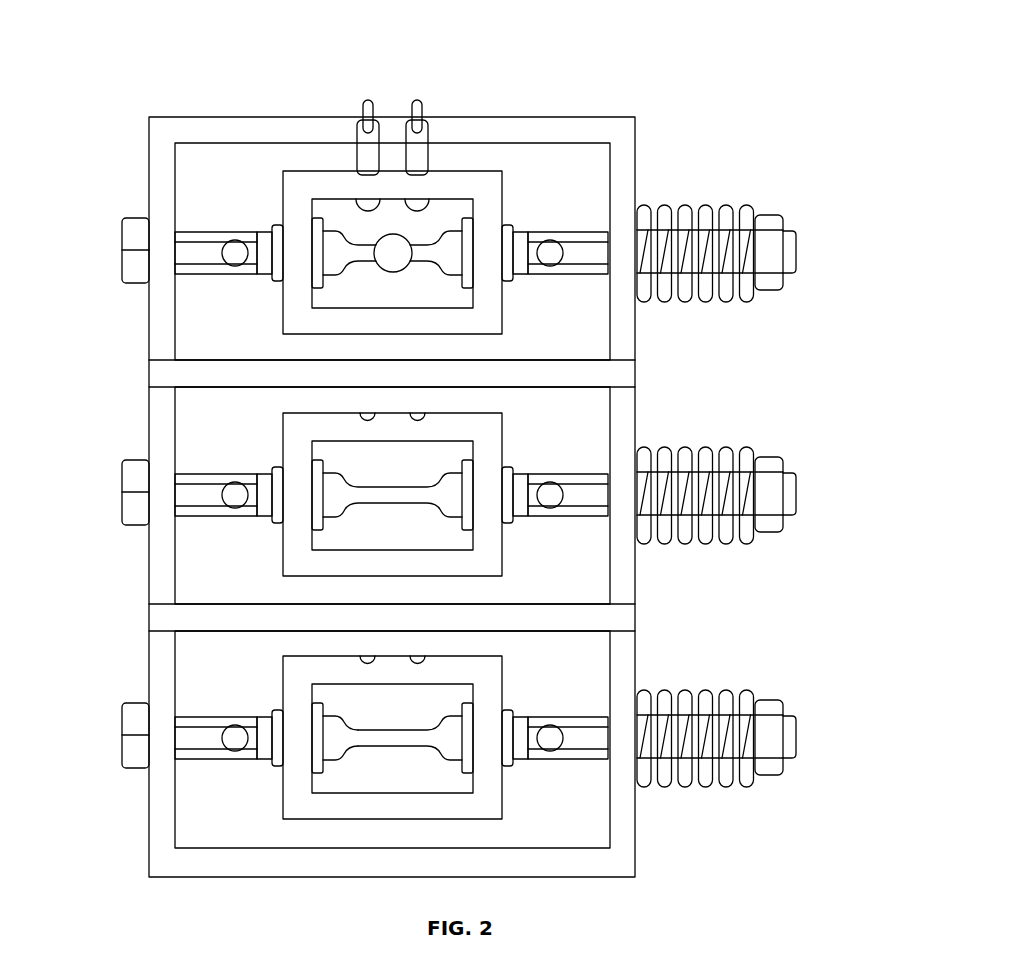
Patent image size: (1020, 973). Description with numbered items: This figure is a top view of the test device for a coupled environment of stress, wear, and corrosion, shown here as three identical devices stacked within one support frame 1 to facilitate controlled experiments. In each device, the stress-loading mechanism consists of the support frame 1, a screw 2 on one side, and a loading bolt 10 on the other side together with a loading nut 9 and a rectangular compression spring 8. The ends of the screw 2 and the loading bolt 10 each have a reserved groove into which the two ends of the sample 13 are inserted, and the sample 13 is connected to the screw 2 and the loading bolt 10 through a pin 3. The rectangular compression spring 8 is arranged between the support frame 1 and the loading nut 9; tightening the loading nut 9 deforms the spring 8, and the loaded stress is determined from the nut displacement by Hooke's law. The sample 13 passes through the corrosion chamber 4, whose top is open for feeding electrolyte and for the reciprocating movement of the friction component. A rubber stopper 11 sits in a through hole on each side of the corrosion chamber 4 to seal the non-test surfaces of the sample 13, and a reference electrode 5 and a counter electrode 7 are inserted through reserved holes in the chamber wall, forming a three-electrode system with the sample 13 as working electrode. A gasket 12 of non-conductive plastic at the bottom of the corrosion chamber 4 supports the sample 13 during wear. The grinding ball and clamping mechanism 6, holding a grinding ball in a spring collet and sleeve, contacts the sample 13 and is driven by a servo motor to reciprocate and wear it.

The support frame 1 is at (197, 143).
The screw 2 is at (202, 257).
The pin 3 is at (238, 500).
The corrosion chamber 4 is at (337, 187).
The reference electrode 5 is at (373, 145).
The grinding ball and clamping mechanism 6 is at (398, 245).
The counter electrode 7 is at (422, 150).
The rectangular compression spring 8 is at (675, 207).
The loading nut 9 is at (770, 212).
The loading bolt 10 is at (787, 250).
The rubber stopper 11 is at (503, 745).
The gasket 12 is at (413, 748).
The sample 13 is at (337, 745).